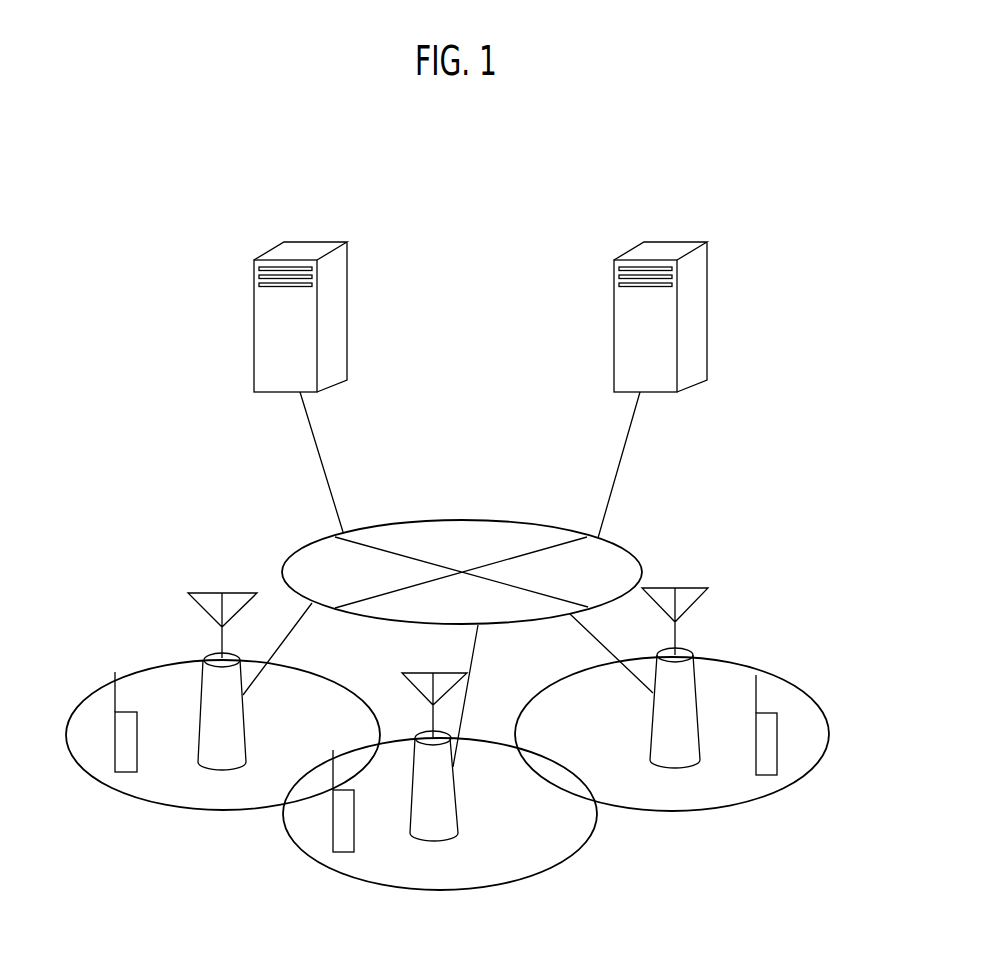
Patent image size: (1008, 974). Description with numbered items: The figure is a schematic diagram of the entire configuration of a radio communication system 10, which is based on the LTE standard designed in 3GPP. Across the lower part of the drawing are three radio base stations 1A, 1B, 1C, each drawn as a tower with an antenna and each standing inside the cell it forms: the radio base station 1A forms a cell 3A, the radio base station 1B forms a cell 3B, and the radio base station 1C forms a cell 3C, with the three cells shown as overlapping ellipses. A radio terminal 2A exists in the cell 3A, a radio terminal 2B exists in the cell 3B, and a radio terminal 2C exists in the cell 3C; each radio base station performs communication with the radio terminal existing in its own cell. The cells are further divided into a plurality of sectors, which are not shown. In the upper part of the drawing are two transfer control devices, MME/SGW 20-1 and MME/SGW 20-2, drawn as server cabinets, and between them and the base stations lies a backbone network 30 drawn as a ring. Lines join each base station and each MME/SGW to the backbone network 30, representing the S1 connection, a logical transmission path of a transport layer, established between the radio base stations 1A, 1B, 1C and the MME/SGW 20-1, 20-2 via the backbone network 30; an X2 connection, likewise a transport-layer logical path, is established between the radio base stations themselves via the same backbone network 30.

The radio communication system 10 is at (762, 145).
The MME/SGW 20-1 is at (302, 242).
The MME/SGW 20-2 is at (662, 242).
The backbone network 30 is at (535, 520).
The radio base station 1A is at (208, 592).
The radio base station 1B is at (422, 734).
The radio base station 1C is at (688, 588).
The radio terminal 2A is at (128, 772).
The radio terminal 2B is at (342, 852).
The radio terminal 2C is at (765, 775).
The cell 3A is at (142, 670).
The cell 3B is at (440, 890).
The cell 3C is at (780, 675).